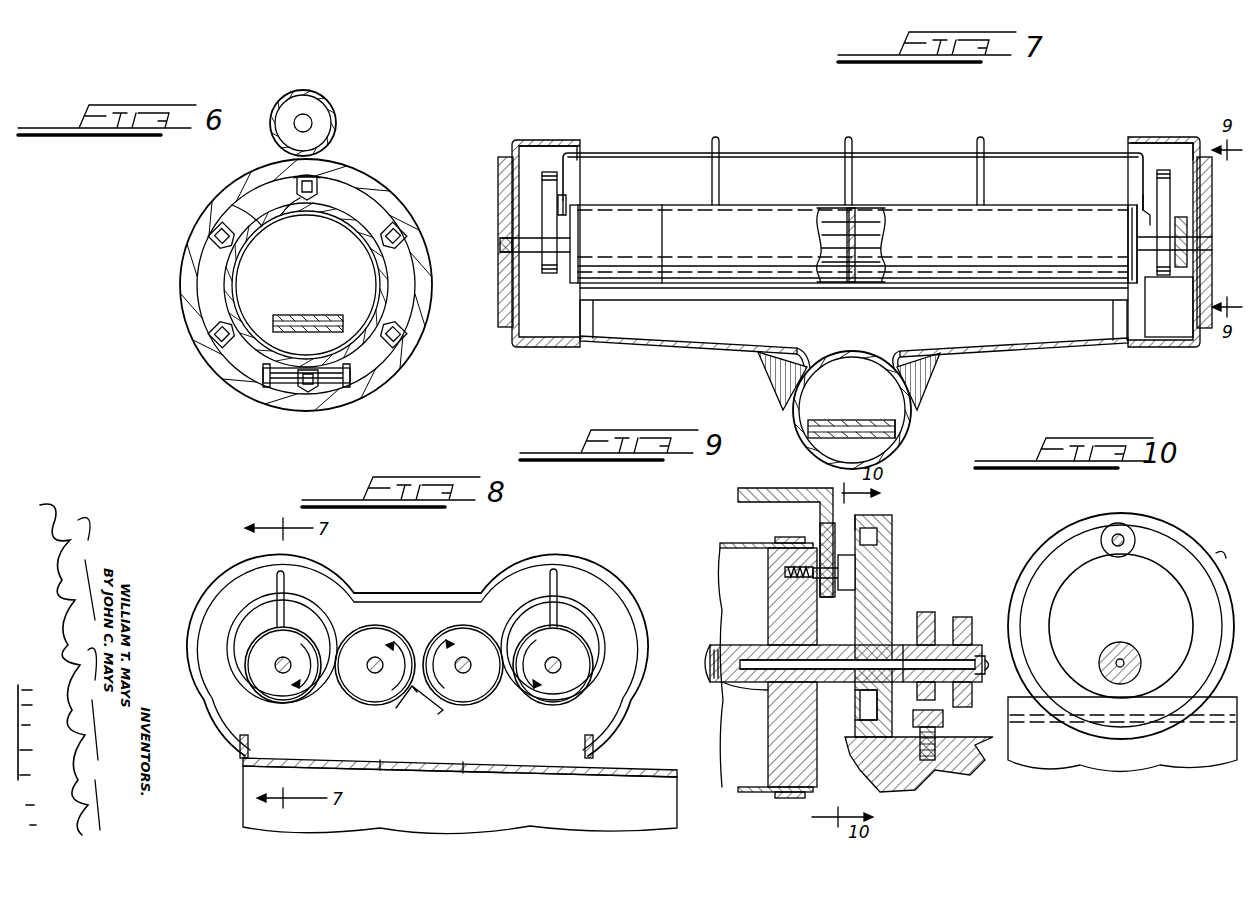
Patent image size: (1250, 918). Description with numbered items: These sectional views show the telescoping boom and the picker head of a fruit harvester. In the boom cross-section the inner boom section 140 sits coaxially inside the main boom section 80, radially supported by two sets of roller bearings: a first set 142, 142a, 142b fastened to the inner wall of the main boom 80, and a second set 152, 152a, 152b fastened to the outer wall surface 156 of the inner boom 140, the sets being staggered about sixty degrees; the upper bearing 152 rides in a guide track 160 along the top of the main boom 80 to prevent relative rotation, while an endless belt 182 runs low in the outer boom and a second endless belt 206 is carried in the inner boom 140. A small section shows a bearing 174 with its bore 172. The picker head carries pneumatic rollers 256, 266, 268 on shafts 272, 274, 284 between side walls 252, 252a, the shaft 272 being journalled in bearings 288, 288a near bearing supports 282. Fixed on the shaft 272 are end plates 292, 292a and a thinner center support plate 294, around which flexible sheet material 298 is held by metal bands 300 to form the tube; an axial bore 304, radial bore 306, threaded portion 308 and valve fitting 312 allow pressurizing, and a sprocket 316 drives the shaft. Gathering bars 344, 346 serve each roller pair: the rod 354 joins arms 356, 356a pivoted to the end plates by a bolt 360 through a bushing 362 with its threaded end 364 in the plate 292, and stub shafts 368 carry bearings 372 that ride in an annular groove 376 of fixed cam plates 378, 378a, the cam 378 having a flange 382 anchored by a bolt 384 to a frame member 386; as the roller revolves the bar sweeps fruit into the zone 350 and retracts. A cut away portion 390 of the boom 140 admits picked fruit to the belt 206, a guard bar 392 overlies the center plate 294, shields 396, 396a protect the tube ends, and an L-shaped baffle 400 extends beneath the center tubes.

In FIG. 6, the main boom section 80 is at (405, 338).
In FIG. 6, the inner boom section 140 is at (353, 350).
In FIG. 7, the inner boom section 140 is at (910, 428).
In FIG. 6, the roller bearing 142 is at (398, 228).
In FIG. 6, the roller bearing 142a is at (307, 392).
In FIG. 6, the roller bearing 142b is at (212, 237).
In FIG. 6, the upper bearing 152 is at (320, 192).
In FIG. 6, the roller bearing 152a is at (400, 335).
In FIG. 6, the roller bearing 152b is at (217, 330).
In FIG. 6, the outer wall surface 156 is at (253, 215).
In FIG. 6, the guide track 160 is at (312, 180).
In FIG. 6, the bore 172 is at (312, 125).
In FIG. 6, the bushing 174 is at (312, 95).
In FIG. 6, the endless belt 182 is at (275, 373).
In FIG. 6, the endless belt 206 is at (282, 307).
In FIG. 7, the endless belt 206 is at (808, 427).
In FIG. 7, the side wall 252 is at (1165, 137).
In FIG. 8, the side wall 252 is at (357, 704).
In FIG. 7, the side wall 252a is at (553, 140).
In FIG. 8, the roller 256 is at (292, 702).
In FIG. 8, the roller 266 is at (550, 690).
In FIG. 8, the roller 268 is at (462, 704).
In FIG. 7, the shaft 272 is at (1153, 247).
In FIG. 8, the shaft 272 is at (277, 672).
In FIG. 9, the shaft 272 is at (715, 655).
In FIG. 10, the shaft 272 is at (1130, 660).
In FIG. 8, the shaft 274 is at (378, 660).
In FIG. 8, the bearing support 282 is at (562, 660).
In FIG. 8, the shaft 284 is at (465, 660).
In FIG. 7, the bearing 288 is at (1200, 263).
In FIG. 9, the bearing 288 is at (960, 617).
In FIG. 7, the bearing 288a is at (505, 250).
In FIG. 7, the end plate 292 is at (1132, 235).
In FIG. 9, the end plate 292 is at (803, 750).
In FIG. 7, the end plate 292a is at (578, 237).
In FIG. 7, the center support plate 294 is at (858, 227).
In FIG. 7, the flexible sheet material 298 is at (663, 205).
In FIG. 9, the flexible sheet material 298 is at (728, 543).
In FIG. 9, the metal band 300 is at (782, 797).
In FIG. 9, the axial bore 304 is at (903, 660).
In FIG. 10, the axial bore 304 is at (1117, 658).
In FIG. 9, the radial bore 306 is at (750, 685).
In FIG. 9, the threaded portion 308 is at (978, 655).
In FIG. 9, the valve fitting 312 is at (984, 670).
In FIG. 7, the sprocket 316 is at (1187, 240).
In FIG. 9, the sprocket 316 is at (935, 612).
In FIG. 7, the gathering bar 344 is at (1008, 152).
In FIG. 8, the gathering bar 344 is at (285, 585).
In FIG. 9, the gathering bar 344 is at (772, 488).
In FIG. 8, the gathering bar 346 is at (552, 585).
In FIG. 8, the fruit pickup zone 350 is at (322, 640).
In FIG. 7, the rod 354 is at (797, 153).
In FIG. 7, the arm 356 is at (1143, 195).
In FIG. 7, the arm 356a is at (565, 200).
In FIG. 9, the bolt 360 is at (845, 570).
In FIG. 9, the bushing 362 is at (838, 573).
In FIG. 9, the threaded end 364 is at (785, 572).
In FIG. 9, the stub shaft 368 is at (860, 520).
In FIG. 10, the stub shaft 368 is at (1117, 523).
In FIG. 9, the bearing 372 is at (878, 540).
In FIG. 10, the bearing 372 is at (1125, 540).
In FIG. 9, the annular groove 376 is at (860, 705).
In FIG. 10, the annular groove 376 is at (1172, 557).
In FIG. 7, the cam plate 378 is at (1157, 185).
In FIG. 9, the cam plate 378 is at (892, 566).
In FIG. 10, the cam plate 378 is at (1220, 562).
In FIG. 7, the cam plate 378a is at (552, 190).
In FIG. 9, the flange 382 is at (921, 770).
In FIG. 9, the bolt 384 is at (943, 718).
In FIG. 9, the frame member 386 is at (950, 760).
In FIG. 10, the frame member 386 is at (1122, 734).
In FIG. 7, the cut away portion 390 is at (863, 372).
In FIG. 7, the guard bar 392 is at (980, 140).
In FIG. 8, the guard bar 392 is at (554, 560).
In FIG. 7, the shield 396 is at (1140, 133).
In FIG. 7, the shield 396a is at (532, 138).
In FIG. 8, the baffle 400 is at (430, 710).